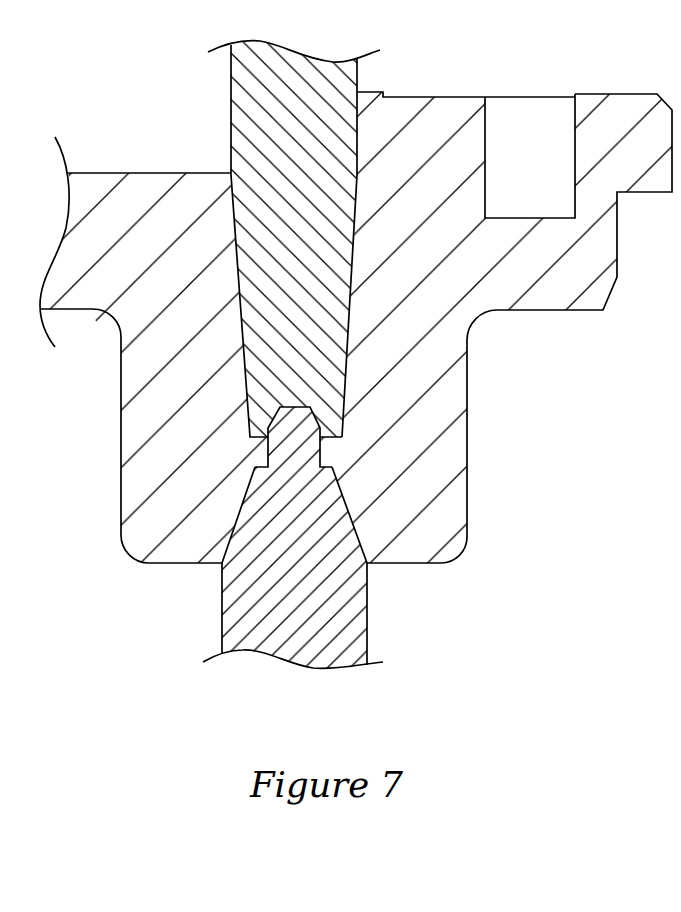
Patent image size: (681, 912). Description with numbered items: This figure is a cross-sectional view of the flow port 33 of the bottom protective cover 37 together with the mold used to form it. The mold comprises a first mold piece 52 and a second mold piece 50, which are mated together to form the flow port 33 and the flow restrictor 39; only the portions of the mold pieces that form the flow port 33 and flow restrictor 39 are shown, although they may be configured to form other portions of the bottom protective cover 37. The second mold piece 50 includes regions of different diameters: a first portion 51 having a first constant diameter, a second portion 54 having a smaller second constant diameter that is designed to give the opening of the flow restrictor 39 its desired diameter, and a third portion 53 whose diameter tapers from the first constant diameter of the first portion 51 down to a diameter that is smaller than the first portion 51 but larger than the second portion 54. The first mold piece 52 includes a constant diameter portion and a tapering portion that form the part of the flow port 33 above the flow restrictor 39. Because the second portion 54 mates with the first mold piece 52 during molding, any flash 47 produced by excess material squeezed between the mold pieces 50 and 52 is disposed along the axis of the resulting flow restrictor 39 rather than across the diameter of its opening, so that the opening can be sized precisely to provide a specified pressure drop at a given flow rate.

The flow port 33 is at (356, 338).
The bottom protective cover 37 is at (157, 183).
The flow restrictor 39 is at (325, 455).
The flash 47 is at (343, 432).
The second mold piece 50 is at (299, 537).
The first portion 51 is at (358, 622).
The first mold piece 52 is at (238, 85).
The third portion 53 is at (340, 527).
The second portion 54 is at (285, 447).